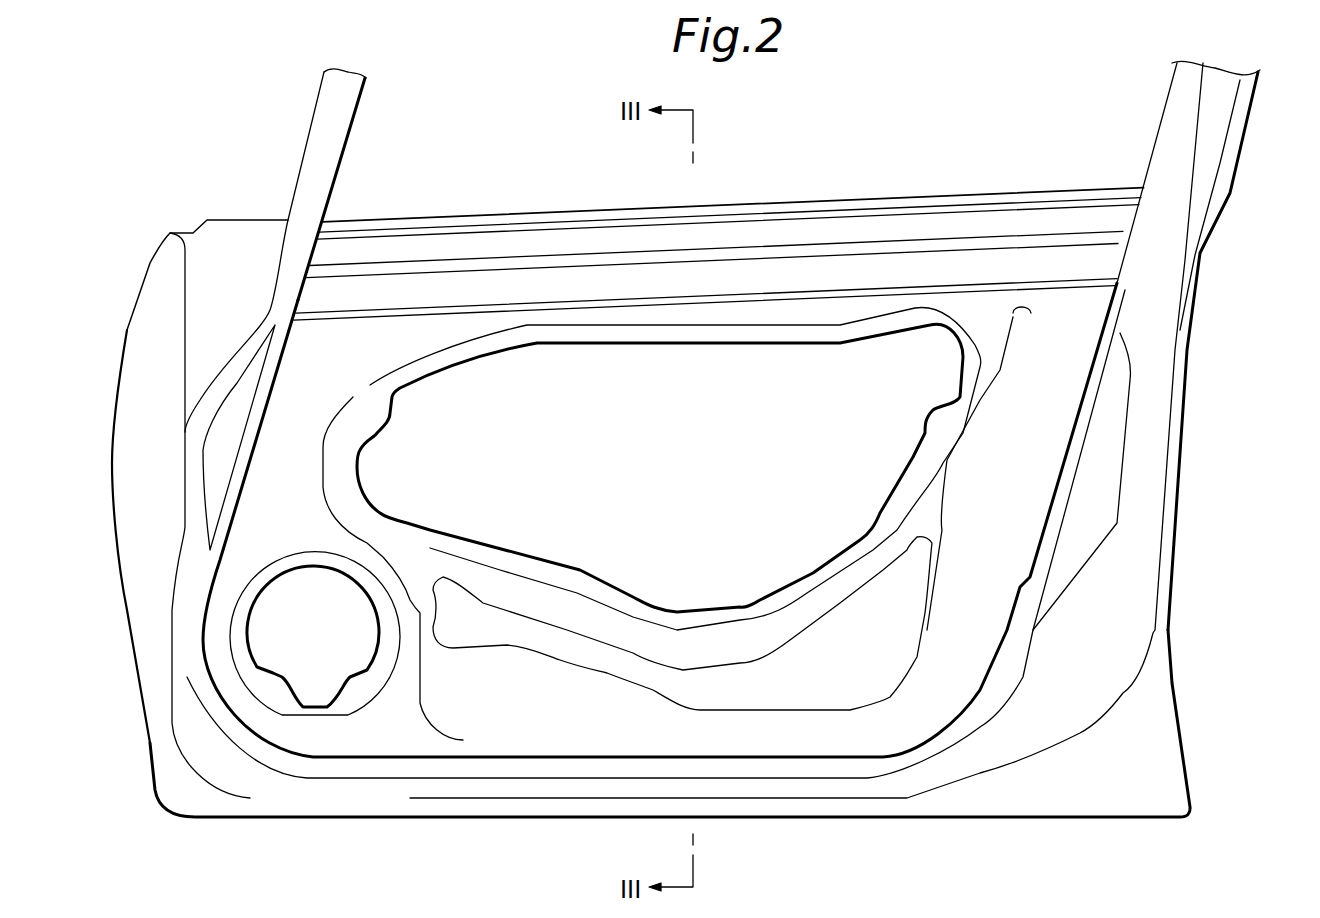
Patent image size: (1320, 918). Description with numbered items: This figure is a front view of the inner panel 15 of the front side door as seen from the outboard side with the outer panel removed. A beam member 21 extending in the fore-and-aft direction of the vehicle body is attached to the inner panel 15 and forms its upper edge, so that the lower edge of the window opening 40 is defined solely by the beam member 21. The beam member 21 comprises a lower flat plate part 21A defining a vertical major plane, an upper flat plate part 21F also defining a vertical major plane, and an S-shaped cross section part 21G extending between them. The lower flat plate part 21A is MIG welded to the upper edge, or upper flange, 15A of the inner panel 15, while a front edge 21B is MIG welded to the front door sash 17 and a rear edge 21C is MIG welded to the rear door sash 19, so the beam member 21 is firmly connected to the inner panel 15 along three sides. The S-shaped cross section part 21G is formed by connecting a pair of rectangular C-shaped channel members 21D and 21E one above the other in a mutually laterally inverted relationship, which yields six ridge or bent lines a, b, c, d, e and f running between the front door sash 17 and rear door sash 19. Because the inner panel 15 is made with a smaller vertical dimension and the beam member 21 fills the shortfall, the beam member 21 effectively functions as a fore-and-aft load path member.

The window opening 40 is at (928, 88).
The front door sash 17 is at (323, 108).
The rear door sash 19 is at (1178, 125).
The inner panel 15 is at (1042, 300).
The upper edge (upper flange) of the inner panel 15A is at (910, 300).
The beam member 21 is at (857, 217).
The lower flat plate part 21A is at (768, 300).
The front edge 21B is at (317, 252).
The rear edge 21C is at (1113, 245).
The rectangular C-shaped channel member 21D is at (567, 237).
The rectangular C-shaped channel member 21E is at (473, 283).
The upper flat plate part 21F is at (397, 223).
The S-shaped cross section part 21G is at (632, 297).
The ridge (bent) line a is at (1013, 200).
The ridge (bent) line b is at (1102, 207).
The ridge (bent) line c is at (980, 240).
The ridge (bent) line d is at (1022, 253).
The ridge (bent) line e is at (1088, 280).
The ridge (bent) line f is at (975, 338).